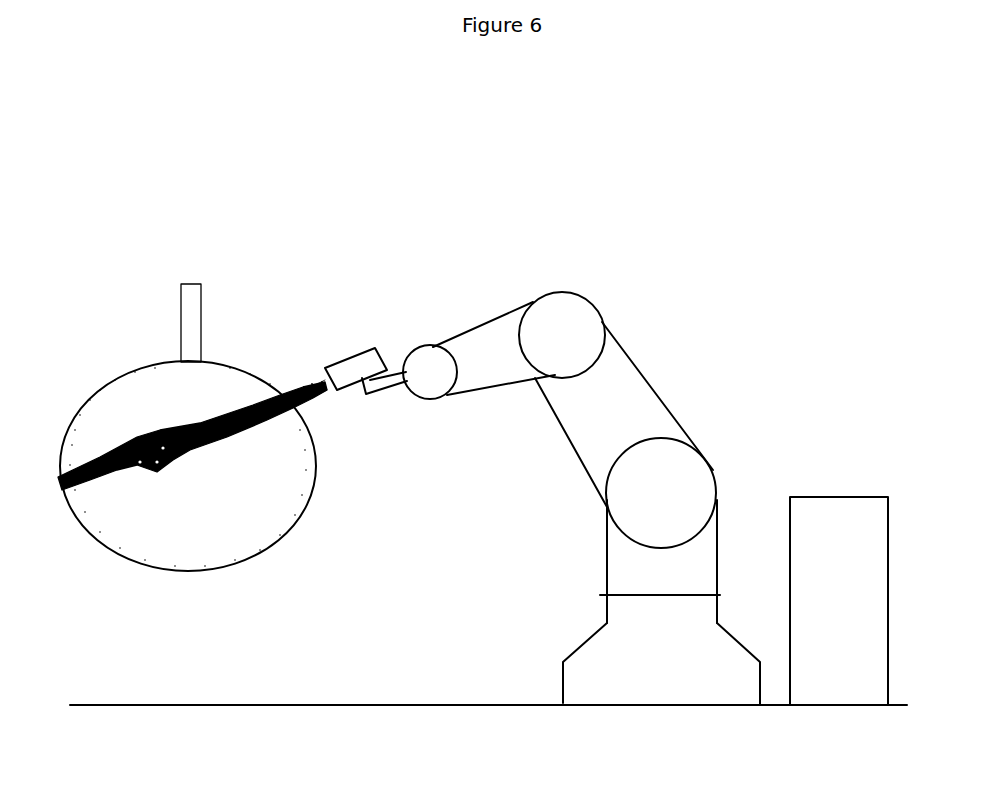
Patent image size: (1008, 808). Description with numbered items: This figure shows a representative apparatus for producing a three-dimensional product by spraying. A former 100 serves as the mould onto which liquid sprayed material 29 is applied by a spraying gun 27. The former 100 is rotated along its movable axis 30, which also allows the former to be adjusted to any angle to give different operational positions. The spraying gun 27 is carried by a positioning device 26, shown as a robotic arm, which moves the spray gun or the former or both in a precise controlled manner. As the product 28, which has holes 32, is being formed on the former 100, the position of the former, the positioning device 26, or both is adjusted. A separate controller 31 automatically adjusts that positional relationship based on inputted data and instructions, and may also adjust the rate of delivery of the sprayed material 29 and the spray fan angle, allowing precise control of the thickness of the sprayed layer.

The positioning device 26 is at (665, 397).
The spraying gun 27 is at (365, 366).
The product 28 is at (62, 490).
The sprayed material 29 is at (293, 382).
The movable axis 30 is at (173, 300).
The controller 31 is at (805, 485).
The holes 32 is at (163, 480).
The former 100 is at (302, 572).